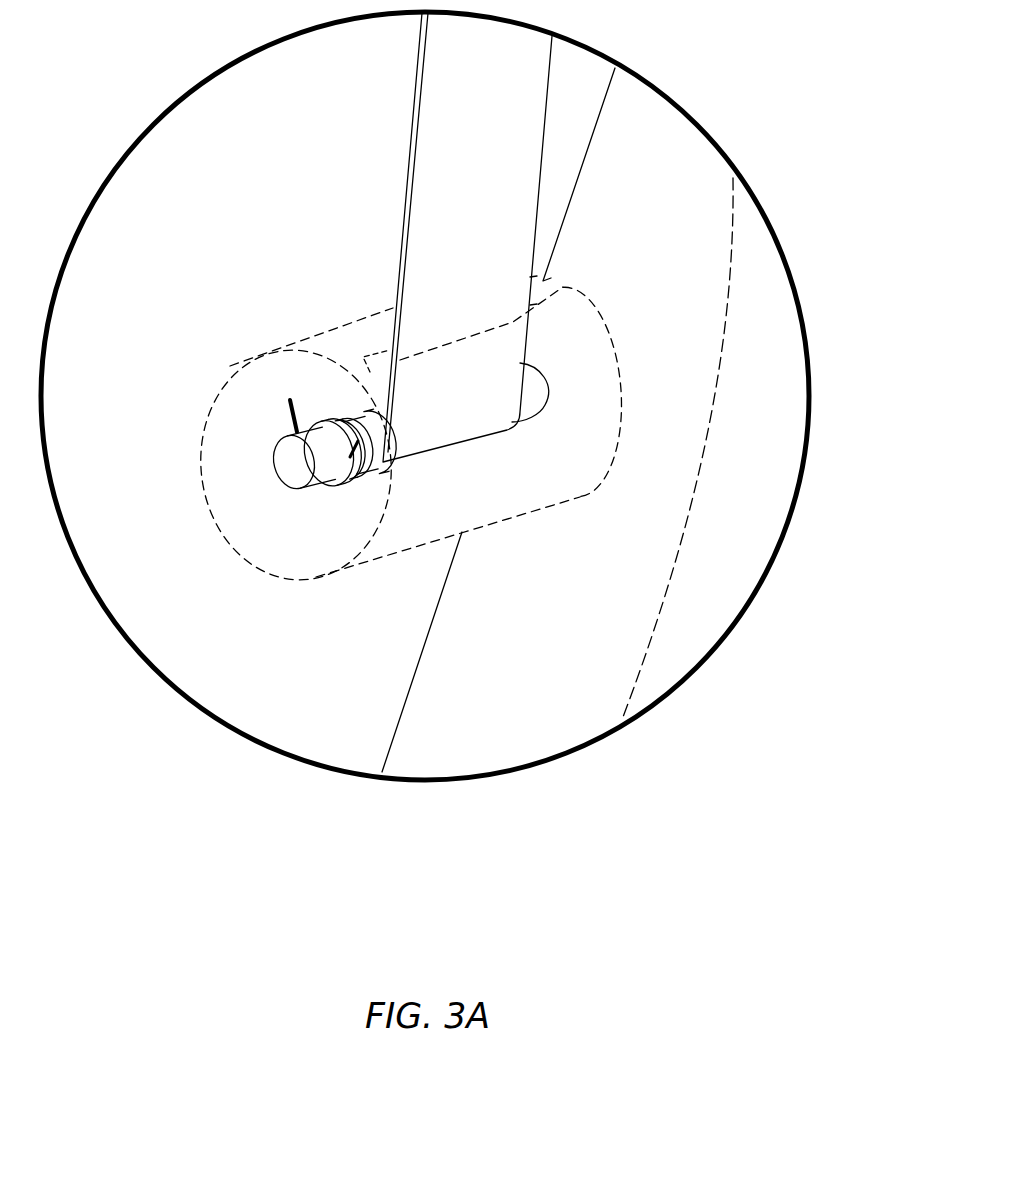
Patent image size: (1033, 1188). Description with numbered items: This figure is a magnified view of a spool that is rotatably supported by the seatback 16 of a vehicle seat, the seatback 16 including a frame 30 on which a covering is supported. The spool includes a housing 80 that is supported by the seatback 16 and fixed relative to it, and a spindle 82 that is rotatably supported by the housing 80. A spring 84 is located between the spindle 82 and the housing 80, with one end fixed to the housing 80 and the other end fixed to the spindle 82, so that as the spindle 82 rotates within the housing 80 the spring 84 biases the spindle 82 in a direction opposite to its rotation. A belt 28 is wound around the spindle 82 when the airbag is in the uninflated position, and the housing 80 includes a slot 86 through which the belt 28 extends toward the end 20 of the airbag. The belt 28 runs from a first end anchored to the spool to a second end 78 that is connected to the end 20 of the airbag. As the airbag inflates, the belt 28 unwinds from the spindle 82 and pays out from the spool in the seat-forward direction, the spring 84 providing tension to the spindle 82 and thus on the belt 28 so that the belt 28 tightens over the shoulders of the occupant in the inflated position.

The seatback 16 is at (734, 331).
The end of the airbag 20 is at (302, 610).
The belt 28 is at (508, 147).
The frame 30 is at (598, 125).
The second end of the belt 78 is at (392, 460).
The housing 80 is at (240, 548).
The spindle 82 is at (290, 467).
The spring 84 is at (288, 410).
The slot 86 is at (562, 288).